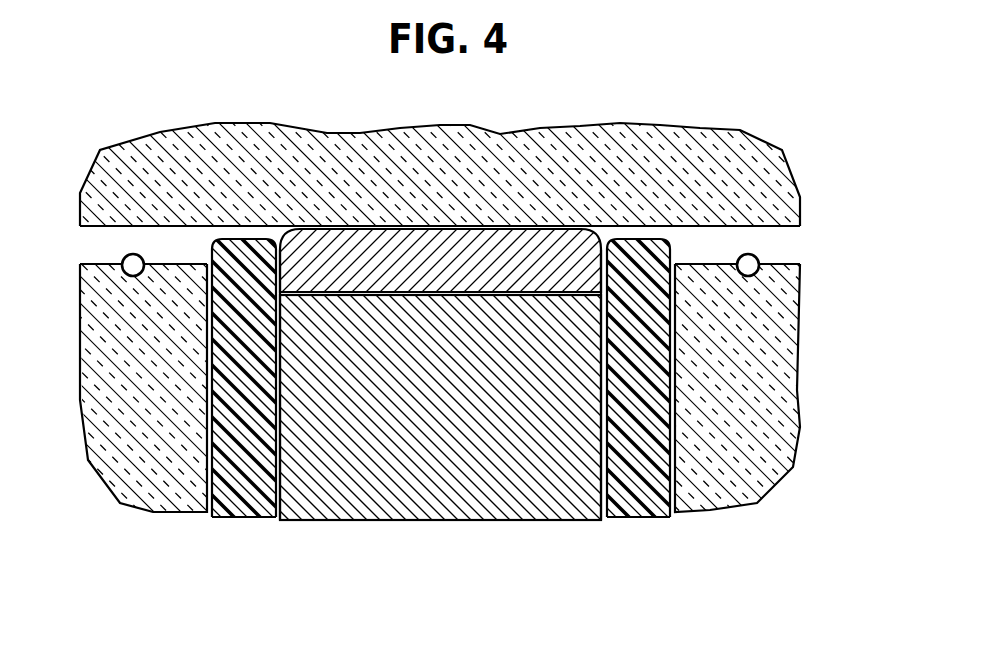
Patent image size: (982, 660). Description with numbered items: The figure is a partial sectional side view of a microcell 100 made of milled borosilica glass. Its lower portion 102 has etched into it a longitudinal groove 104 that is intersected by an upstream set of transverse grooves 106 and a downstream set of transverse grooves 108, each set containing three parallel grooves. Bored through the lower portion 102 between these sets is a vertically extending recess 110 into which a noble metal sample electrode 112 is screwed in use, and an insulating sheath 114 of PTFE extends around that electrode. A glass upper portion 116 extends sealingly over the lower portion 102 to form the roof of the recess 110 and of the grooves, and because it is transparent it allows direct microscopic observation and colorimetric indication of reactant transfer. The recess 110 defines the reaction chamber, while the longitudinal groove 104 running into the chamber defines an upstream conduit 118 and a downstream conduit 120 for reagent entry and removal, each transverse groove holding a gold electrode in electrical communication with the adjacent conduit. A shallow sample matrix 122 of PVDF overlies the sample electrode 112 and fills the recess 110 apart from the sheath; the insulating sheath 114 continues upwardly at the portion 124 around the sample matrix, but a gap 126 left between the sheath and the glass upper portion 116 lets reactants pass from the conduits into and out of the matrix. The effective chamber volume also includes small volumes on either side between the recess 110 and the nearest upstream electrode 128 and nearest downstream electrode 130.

The microcell 100 is at (206, 553).
The lower portion 102 is at (148, 503).
The longitudinal groove 104 is at (690, 247).
The upstream set of transverse grooves 106 is at (822, 298).
The downstream set of transverse grooves 108 is at (87, 192).
The recess 110 is at (232, 503).
The sample electrode 112 is at (417, 523).
The insulating sheath 114 is at (265, 503).
The upper portion 116 is at (331, 138).
The upstream conduit 118 is at (737, 248).
The downstream conduit 120 is at (167, 235).
The sample matrix 122 is at (432, 232).
The upwardly extending portion of insulating sheath 124 is at (262, 237).
The gap 126 is at (232, 233).
The nearest upstream electrode 128 is at (122, 257).
The nearest downstream electrode 130 is at (762, 268).